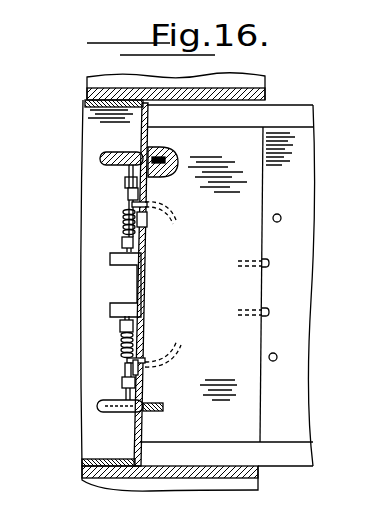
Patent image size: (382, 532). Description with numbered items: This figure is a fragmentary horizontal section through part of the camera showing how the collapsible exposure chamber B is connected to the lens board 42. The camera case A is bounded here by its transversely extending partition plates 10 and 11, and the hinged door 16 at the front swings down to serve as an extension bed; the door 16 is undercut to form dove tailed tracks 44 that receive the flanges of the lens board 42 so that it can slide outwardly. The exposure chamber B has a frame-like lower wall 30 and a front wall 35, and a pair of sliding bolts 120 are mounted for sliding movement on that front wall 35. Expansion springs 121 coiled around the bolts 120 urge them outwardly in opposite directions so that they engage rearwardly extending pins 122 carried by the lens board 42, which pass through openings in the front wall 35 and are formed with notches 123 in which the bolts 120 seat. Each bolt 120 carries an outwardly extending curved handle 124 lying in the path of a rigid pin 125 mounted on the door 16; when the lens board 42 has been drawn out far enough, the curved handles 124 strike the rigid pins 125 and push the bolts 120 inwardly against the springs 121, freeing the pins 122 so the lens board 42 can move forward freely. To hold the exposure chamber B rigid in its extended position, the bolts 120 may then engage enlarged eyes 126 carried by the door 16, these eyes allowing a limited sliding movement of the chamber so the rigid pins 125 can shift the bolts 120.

The case A is at (248, 88).
The collapsible exposure chamber B is at (85, 104).
The partition plate 10 is at (258, 479).
The partition plate 11 is at (265, 98).
The door 16 is at (278, 113).
The lower wall 30 is at (100, 287).
The front wall 35 is at (143, 434).
The lens board 42 is at (217, 278).
The dove tailed tracks 44 is at (293, 120).
The sliding bolts 120 is at (128, 192).
The expansion springs 121 is at (127, 217).
The pins 122 is at (100, 157).
The notches 123 is at (118, 164).
The curved handles 124 is at (125, 212).
The rigid pins 125 is at (281, 218).
The enlarged eyes 126 is at (267, 312).